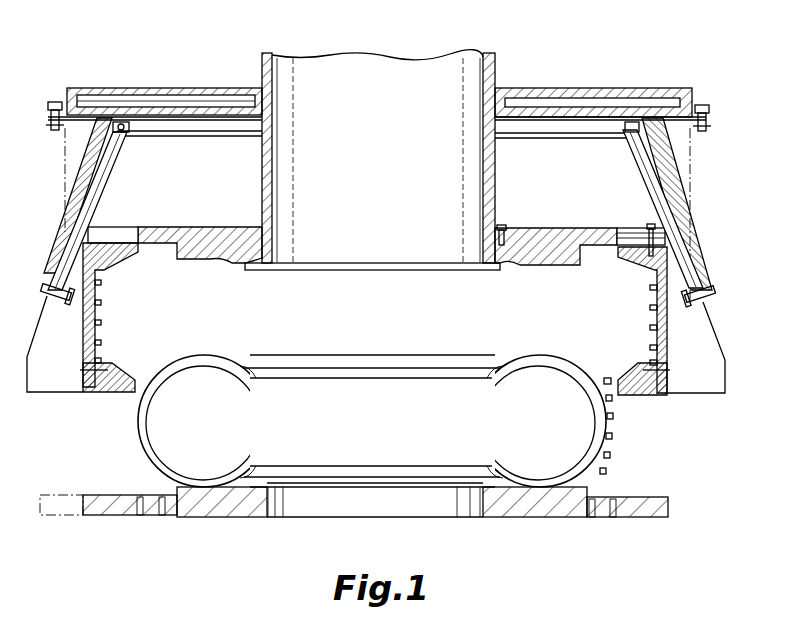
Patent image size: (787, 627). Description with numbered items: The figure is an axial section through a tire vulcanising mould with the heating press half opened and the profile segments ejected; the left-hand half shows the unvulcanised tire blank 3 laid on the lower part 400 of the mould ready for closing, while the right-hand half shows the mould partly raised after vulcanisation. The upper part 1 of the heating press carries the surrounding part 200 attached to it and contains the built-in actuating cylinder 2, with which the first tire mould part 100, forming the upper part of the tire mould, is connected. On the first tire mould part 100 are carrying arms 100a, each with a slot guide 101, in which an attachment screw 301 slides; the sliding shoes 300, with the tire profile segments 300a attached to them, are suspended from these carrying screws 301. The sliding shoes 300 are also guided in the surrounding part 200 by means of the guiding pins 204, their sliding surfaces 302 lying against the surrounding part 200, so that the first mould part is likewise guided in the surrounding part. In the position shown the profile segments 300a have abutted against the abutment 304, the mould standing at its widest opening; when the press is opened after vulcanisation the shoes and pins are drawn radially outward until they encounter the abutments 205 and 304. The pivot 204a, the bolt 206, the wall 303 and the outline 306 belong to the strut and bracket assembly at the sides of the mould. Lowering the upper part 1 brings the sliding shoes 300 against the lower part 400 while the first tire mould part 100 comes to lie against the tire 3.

The upper part of the heating press 1 is at (92, 88).
The actuating cylinder 2 is at (276, 62).
The tire blank 3 is at (147, 433).
The first tire mould part 100 is at (487, 256).
The carrying arms 100a is at (627, 229).
The slot guide 101 is at (122, 233).
The surrounding part 200 is at (691, 226).
The guiding pins 204 is at (115, 158).
The pivot 204a is at (127, 133).
The abutment 205 is at (44, 264).
The bolt 206 is at (708, 298).
The sliding shoes 300 is at (113, 394).
The tire profile segments 300a is at (657, 310).
The attachment screw 301 is at (652, 226).
The sliding surfaces 302 is at (697, 392).
The vertical wall 303 is at (660, 284).
The abutment 304 is at (78, 300).
The outline 306 is at (72, 384).
The second tire mould part 400 is at (530, 508).